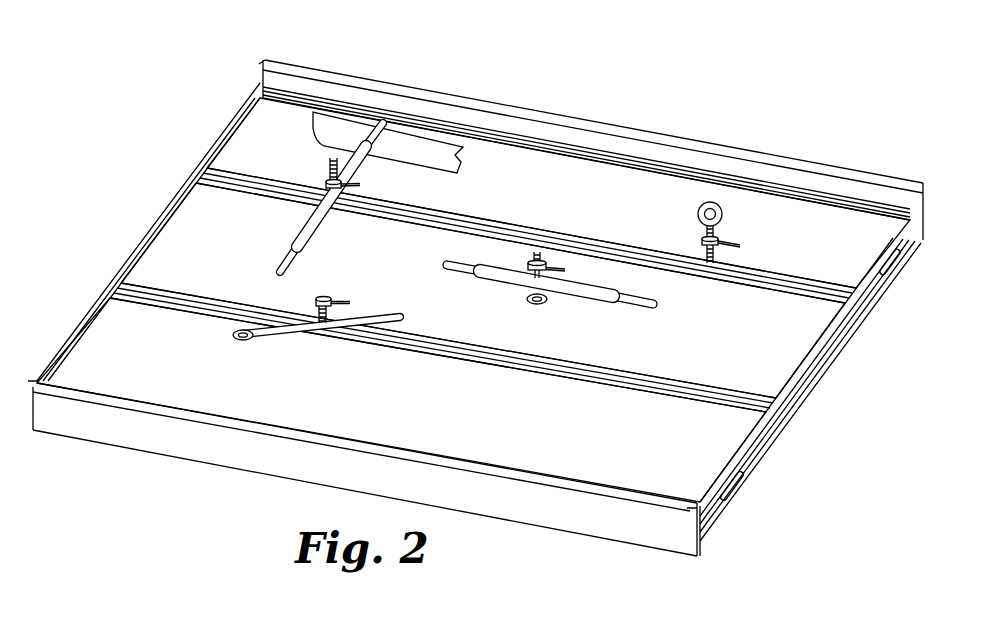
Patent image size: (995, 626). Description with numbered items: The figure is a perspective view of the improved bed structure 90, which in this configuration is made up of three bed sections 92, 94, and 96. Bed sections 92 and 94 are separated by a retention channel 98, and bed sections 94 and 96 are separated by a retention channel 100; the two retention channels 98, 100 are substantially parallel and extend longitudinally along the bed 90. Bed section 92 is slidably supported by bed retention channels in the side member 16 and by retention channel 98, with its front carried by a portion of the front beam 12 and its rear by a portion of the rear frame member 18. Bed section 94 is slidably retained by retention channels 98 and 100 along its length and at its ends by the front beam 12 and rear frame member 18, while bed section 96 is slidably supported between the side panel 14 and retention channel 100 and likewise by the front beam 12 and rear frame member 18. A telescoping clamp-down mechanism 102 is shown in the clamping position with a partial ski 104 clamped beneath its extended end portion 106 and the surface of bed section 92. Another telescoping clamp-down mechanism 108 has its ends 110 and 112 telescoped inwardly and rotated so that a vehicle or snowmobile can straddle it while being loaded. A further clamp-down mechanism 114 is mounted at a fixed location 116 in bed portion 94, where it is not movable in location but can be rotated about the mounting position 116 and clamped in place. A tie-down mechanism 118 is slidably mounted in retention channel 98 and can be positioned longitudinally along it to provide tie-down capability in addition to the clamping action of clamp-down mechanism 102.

The bed structure 90 is at (725, 84).
The front beam 12 is at (157, 222).
The side panel 14 is at (212, 462).
The side member 16 is at (510, 104).
The rear frame member 18 is at (822, 382).
The bed section 92 is at (756, 203).
The bed section 94 is at (715, 353).
The bed section 96 is at (612, 447).
The retention channel 98 is at (518, 223).
The retention channel 100 is at (434, 337).
The telescoping clamp-down mechanism 102 is at (318, 226).
The partial ski 104 is at (422, 140).
The extended end portion 106 is at (378, 123).
The telescoping clamp-down mechanism 108 is at (290, 338).
The end 110 is at (406, 310).
The end 112 is at (242, 340).
The clamp-down mechanism 114 is at (588, 302).
The fixed location 116 is at (534, 306).
The tie-down mechanism 118 is at (716, 198).